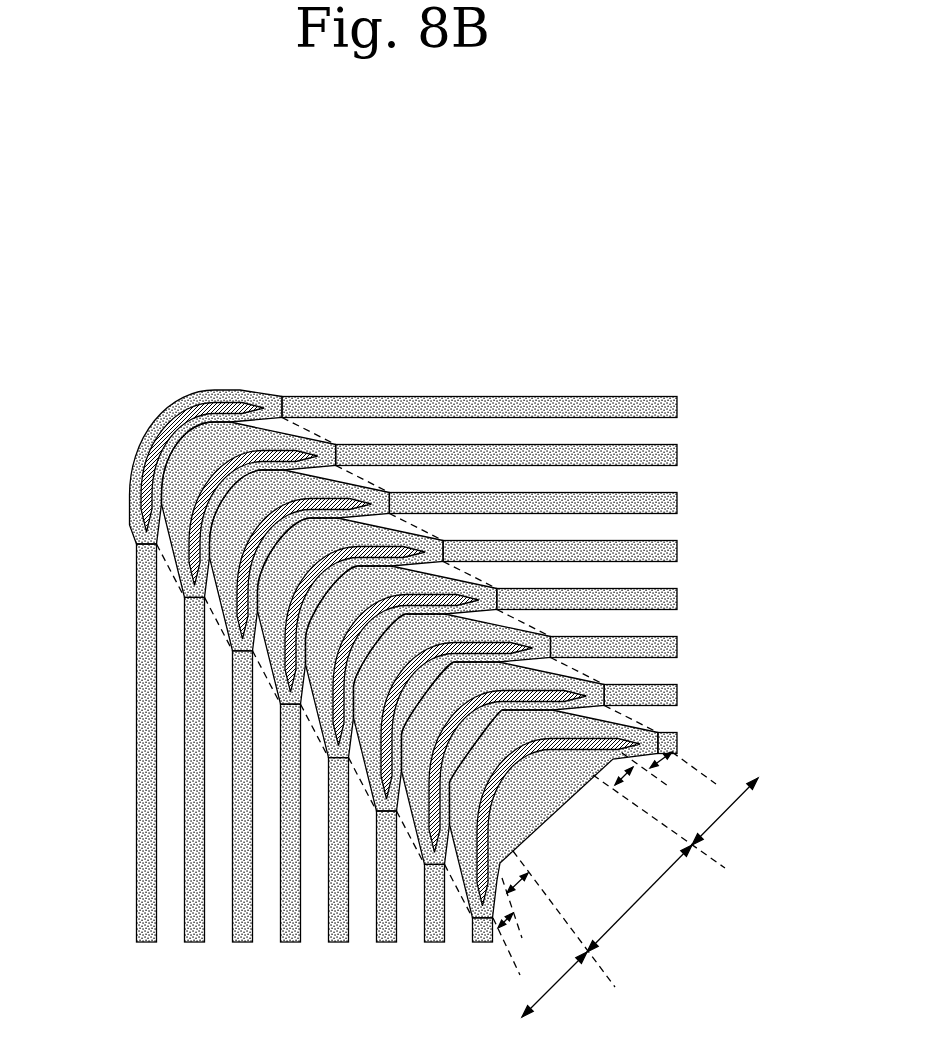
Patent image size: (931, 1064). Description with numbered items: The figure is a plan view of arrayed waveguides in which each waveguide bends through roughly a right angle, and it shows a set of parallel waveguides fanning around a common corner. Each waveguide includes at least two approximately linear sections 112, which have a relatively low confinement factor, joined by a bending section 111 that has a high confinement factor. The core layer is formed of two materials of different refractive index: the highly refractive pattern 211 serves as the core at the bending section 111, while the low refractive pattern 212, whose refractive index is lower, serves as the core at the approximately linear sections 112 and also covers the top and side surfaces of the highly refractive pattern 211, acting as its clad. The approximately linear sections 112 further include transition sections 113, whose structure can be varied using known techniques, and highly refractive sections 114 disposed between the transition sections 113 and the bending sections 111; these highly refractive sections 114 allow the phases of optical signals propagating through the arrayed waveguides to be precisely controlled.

The bending section 111 is at (639, 898).
The approximately linear section 112 is at (645, 897).
The transition section 113 is at (601, 852).
The highly refractive section 114 is at (630, 790).
The highly refractive pattern 211 is at (145, 434).
The low refractive pattern 212 is at (134, 712).